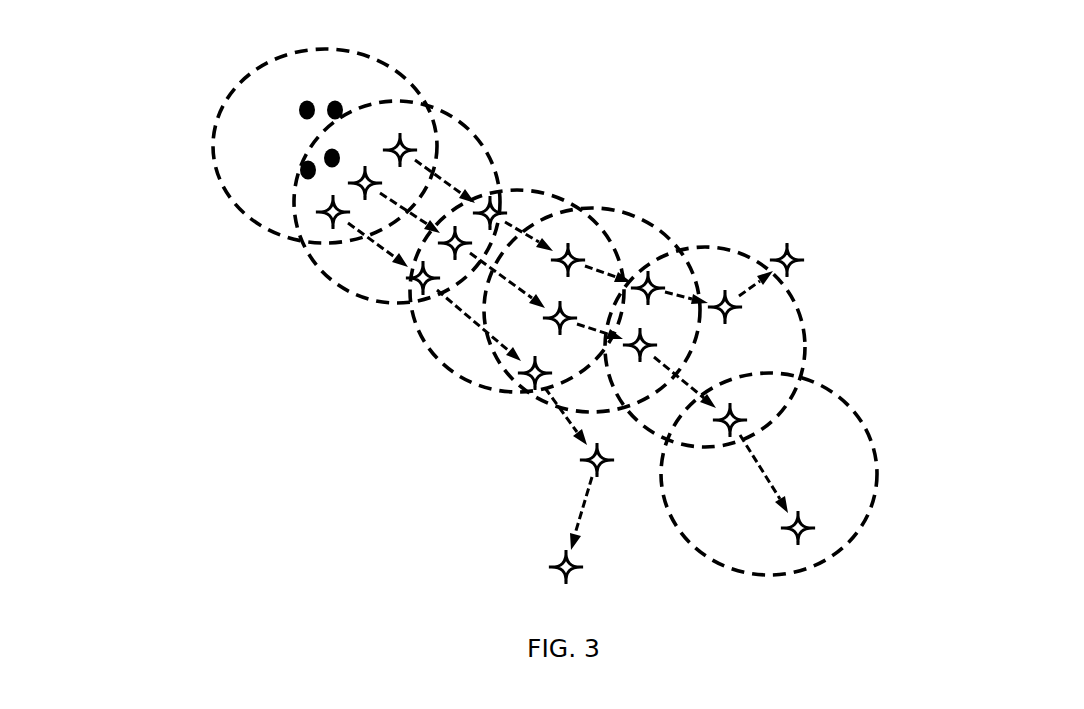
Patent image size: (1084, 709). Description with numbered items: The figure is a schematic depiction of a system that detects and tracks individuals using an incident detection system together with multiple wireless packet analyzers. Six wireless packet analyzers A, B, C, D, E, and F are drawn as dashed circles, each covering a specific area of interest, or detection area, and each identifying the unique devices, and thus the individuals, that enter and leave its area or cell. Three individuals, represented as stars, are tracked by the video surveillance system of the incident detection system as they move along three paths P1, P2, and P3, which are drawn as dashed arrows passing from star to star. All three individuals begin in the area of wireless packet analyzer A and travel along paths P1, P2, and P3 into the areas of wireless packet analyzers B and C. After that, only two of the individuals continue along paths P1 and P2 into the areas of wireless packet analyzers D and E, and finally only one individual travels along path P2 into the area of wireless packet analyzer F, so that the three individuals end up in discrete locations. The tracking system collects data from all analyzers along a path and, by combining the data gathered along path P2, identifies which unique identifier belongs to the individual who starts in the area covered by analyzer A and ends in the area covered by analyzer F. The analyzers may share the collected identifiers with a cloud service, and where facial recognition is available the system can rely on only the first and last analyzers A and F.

The wireless packet analyzer A is at (370, 53).
The wireless packet analyzer B is at (480, 137).
The wireless packet analyzer C is at (430, 340).
The wireless packet analyzer D is at (638, 190).
The wireless packet analyzer E is at (713, 247).
The wireless packet analyzer F is at (823, 390).
The path P1 is at (395, 139).
The path P2 is at (348, 177).
The path P3 is at (325, 210).